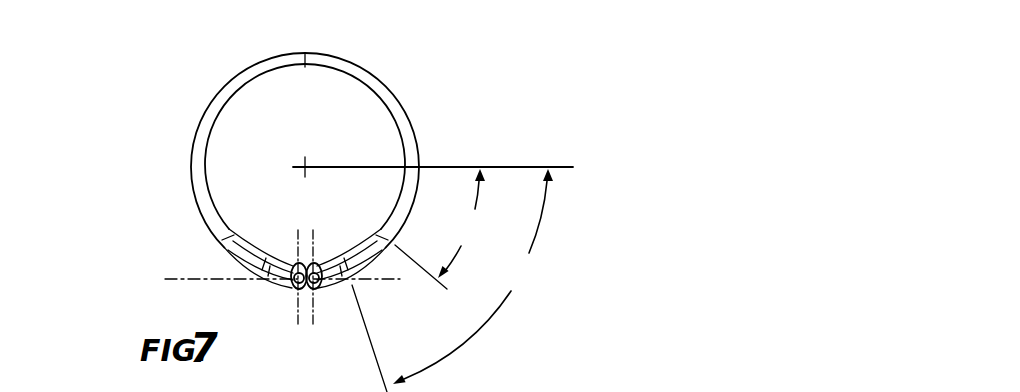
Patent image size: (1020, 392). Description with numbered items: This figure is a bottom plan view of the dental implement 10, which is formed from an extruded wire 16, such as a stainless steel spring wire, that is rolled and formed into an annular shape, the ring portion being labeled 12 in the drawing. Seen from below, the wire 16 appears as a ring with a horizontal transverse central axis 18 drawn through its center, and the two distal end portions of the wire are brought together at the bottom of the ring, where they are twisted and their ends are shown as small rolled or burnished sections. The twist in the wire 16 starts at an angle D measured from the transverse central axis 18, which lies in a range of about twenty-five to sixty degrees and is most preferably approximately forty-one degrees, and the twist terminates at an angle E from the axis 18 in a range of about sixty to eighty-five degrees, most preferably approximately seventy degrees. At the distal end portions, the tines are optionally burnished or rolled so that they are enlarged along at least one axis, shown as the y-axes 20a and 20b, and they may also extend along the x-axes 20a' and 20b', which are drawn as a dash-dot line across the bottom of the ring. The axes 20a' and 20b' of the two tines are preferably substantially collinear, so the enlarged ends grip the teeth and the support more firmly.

The dental implement 10 is at (150, 143).
The outer ring 12 is at (393, 97).
The extruded wire 16 is at (420, 142).
The transverse central axis 18 is at (518, 167).
The y-axis 20a is at (264, 256).
The y-axis 20b is at (347, 256).
The x-axis 20a' is at (231, 301).
The x-axis 20b' is at (364, 301).
The angle D is at (440, 229).
The angle E is at (452, 280).